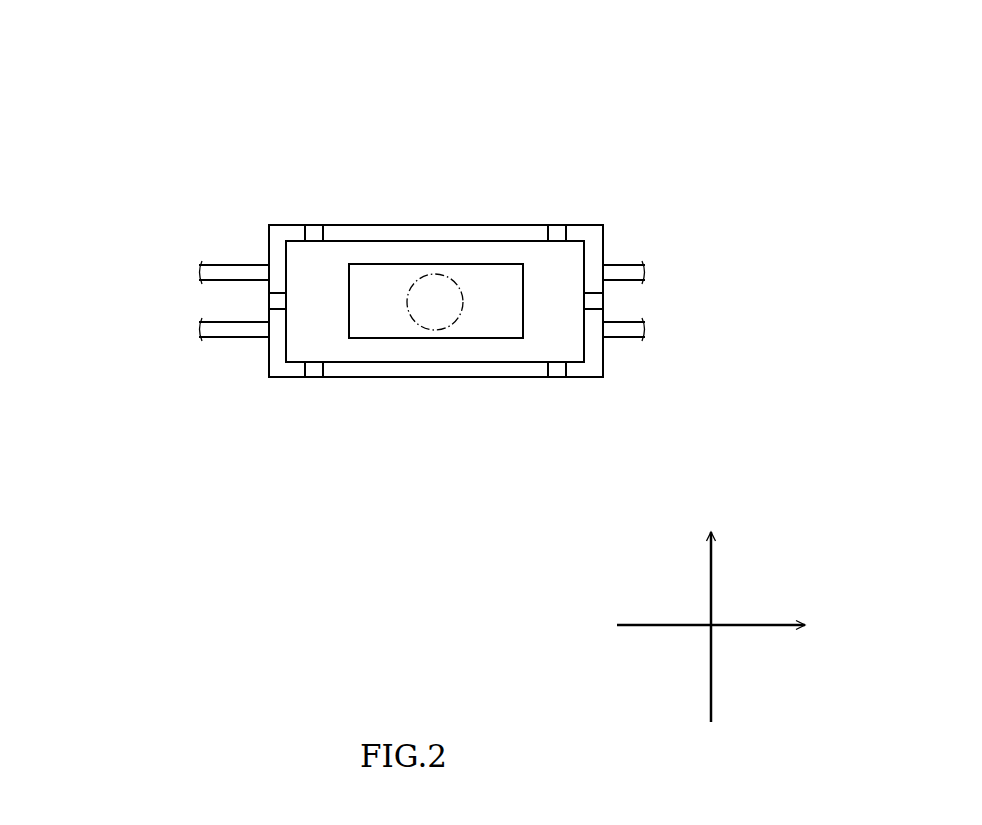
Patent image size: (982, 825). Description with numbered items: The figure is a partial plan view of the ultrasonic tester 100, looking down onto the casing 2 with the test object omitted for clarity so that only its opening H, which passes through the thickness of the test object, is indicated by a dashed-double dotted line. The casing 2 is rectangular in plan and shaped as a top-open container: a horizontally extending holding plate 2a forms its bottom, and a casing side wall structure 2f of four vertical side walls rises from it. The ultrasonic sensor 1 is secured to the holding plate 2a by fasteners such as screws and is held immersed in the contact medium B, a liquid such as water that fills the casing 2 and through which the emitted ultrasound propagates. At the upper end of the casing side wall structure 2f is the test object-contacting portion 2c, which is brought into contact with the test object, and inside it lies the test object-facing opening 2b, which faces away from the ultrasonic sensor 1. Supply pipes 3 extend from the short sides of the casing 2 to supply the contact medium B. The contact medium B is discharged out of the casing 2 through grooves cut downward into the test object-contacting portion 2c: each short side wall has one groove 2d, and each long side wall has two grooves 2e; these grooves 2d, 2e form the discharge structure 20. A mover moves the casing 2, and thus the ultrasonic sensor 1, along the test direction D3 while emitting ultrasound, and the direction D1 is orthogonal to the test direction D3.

The ultrasonic tester 100 is at (205, 112).
The casing 2 is at (263, 225).
The holding plate 2a is at (442, 350).
The test object-facing opening 2b is at (440, 254).
The test object-contacting portion 2c is at (588, 235).
The groove 2d is at (272, 299).
The groove 2e is at (314, 228).
The casing side wall structure 2f is at (518, 378).
The discharge structure 20 is at (495, 302).
The supply pipe 3 is at (231, 329).
The ultrasonic sensor 1 is at (395, 312).
The opening H is at (460, 315).
The contact medium B is at (368, 255).
The direction D1 is at (657, 625).
The test direction D3 is at (713, 572).